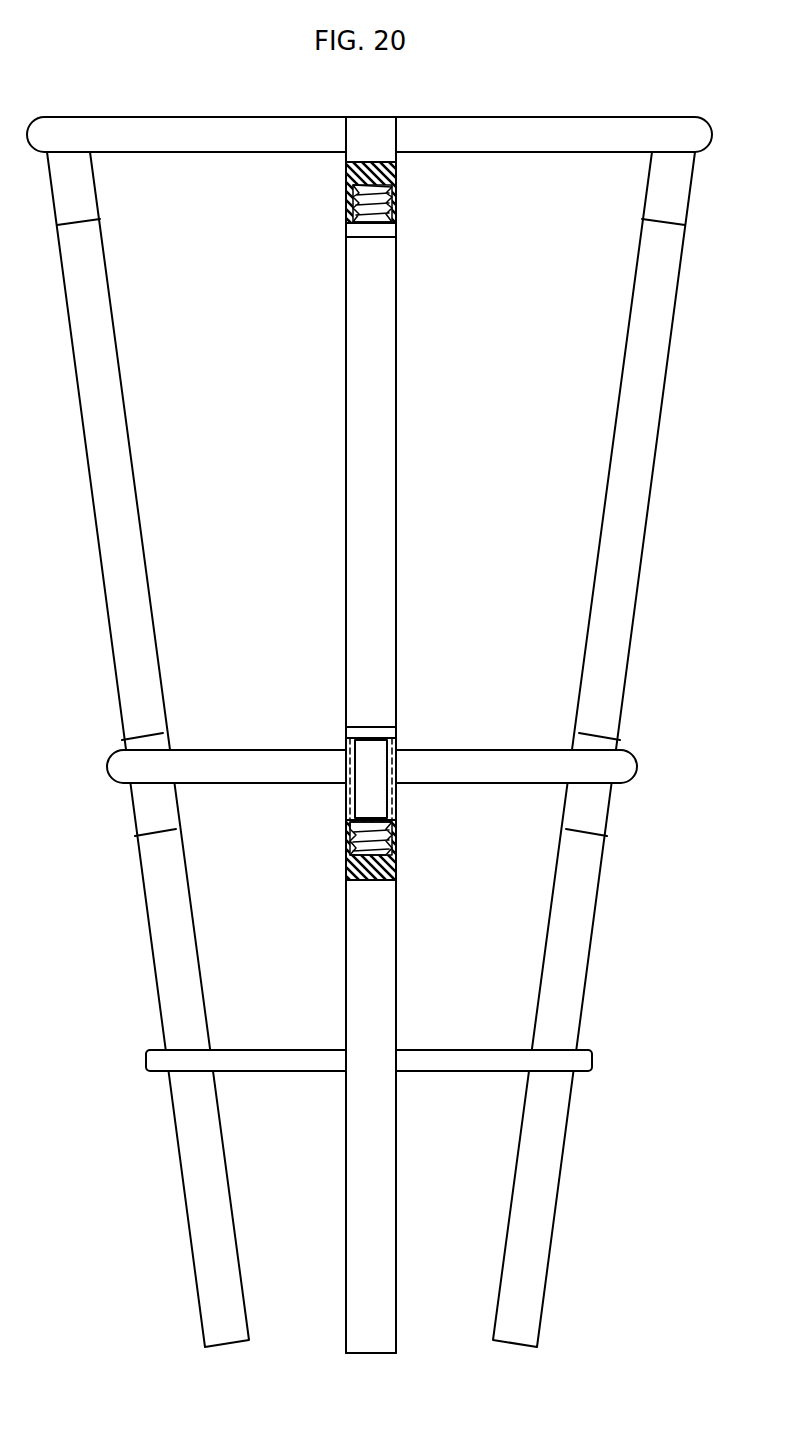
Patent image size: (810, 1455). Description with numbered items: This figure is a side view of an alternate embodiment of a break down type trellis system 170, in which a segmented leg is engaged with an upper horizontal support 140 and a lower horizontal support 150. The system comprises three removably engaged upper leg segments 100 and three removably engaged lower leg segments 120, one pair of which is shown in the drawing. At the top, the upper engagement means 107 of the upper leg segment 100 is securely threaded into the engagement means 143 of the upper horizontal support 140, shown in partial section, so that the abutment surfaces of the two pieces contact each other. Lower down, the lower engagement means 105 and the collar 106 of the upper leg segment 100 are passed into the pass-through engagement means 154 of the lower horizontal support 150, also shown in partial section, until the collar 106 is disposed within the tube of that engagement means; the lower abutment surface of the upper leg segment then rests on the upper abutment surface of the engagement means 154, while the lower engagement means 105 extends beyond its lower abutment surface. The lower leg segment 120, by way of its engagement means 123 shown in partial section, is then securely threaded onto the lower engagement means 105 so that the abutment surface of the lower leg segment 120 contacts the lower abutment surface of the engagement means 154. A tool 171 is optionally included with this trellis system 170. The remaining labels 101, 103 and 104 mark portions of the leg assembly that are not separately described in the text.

The trellis system 170 is at (188, 82).
The upper horizontal support 140 is at (447, 130).
The engagement means 143 is at (363, 142).
The upper engagement means 107 is at (397, 202).
The upper shoulder 103 is at (397, 228).
The upper shaft section 101 is at (367, 388).
The upper leg segment 100 is at (400, 512).
The coupling shoulder 104 is at (398, 727).
The lower horizontal support 150 is at (423, 757).
The pass-through engagement means 154 is at (347, 770).
The collar 106 is at (370, 785).
The lower engagement means 105 is at (347, 837).
The engagement means 123 is at (397, 862).
The lower leg segment 120 is at (357, 1008).
The tool 171 is at (250, 1049).